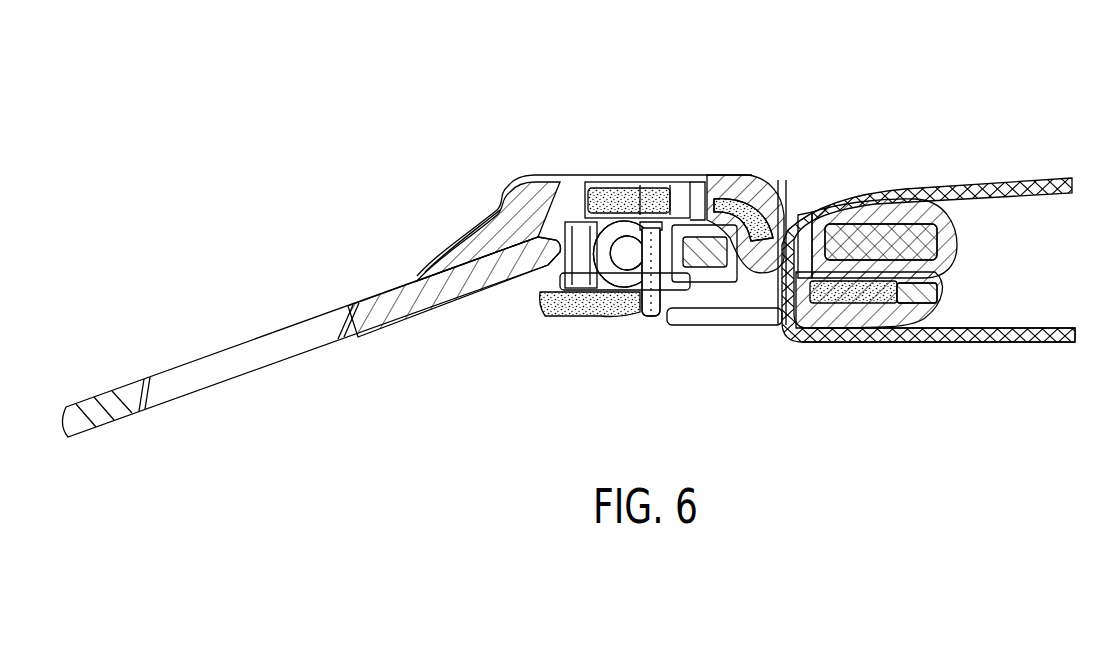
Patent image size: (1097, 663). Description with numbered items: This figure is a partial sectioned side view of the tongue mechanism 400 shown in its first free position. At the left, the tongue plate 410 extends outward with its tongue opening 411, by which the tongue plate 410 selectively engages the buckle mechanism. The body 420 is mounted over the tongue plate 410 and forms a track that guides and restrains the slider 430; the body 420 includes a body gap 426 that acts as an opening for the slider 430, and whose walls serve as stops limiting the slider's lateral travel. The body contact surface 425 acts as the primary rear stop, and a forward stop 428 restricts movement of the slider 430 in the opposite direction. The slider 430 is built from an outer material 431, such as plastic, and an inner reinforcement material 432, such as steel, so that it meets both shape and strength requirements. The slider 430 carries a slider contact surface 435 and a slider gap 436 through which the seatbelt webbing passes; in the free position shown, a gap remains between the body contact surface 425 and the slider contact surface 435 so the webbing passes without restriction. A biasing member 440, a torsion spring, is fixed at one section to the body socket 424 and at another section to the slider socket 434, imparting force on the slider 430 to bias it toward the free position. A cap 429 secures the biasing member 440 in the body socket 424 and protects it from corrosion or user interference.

The tongue mechanism 400 is at (466, 96).
The tongue opening 411 is at (243, 358).
The tongue plate 410 is at (418, 318).
The forward stop 428 is at (562, 176).
The inner reinforcement material 432 is at (598, 180).
The slider socket 434 is at (652, 172).
The outer material 431 is at (700, 180).
The slider 430 is at (745, 172).
The slider contact surface 435 is at (779, 212).
The cap 429 is at (636, 301).
The body socket 424 is at (673, 312).
The body gap 426 is at (745, 298).
The biasing member 440 is at (616, 294).
The slider gap 436 is at (774, 334).
The body 420 is at (909, 209).
The body contact surface 425 is at (819, 216).